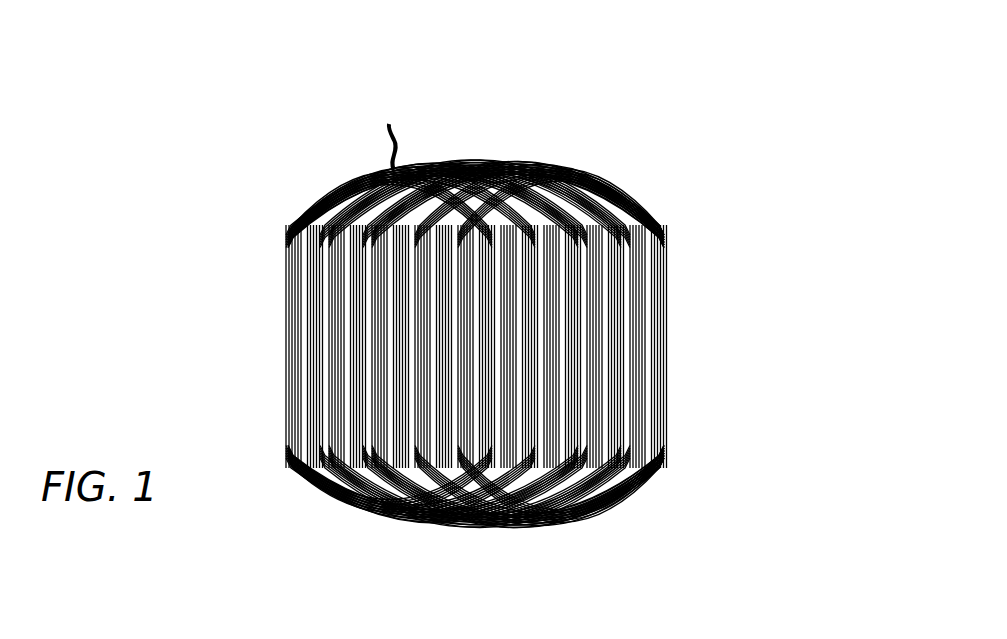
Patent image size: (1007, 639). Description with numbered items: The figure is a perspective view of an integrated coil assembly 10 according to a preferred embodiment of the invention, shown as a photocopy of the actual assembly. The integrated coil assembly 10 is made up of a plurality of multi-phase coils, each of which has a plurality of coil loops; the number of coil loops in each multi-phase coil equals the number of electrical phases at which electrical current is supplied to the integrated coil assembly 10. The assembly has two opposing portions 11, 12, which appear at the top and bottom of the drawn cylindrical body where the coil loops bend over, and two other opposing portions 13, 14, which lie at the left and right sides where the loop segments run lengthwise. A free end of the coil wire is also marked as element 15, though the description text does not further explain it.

The integrated coil assembly 10 is at (547, 326).
The opposing portion 11 is at (469, 134).
The opposing portion 12 is at (506, 543).
The other opposing portion 13 is at (252, 348).
The other opposing portion 14 is at (686, 334).
The free wire end 15 is at (354, 120).